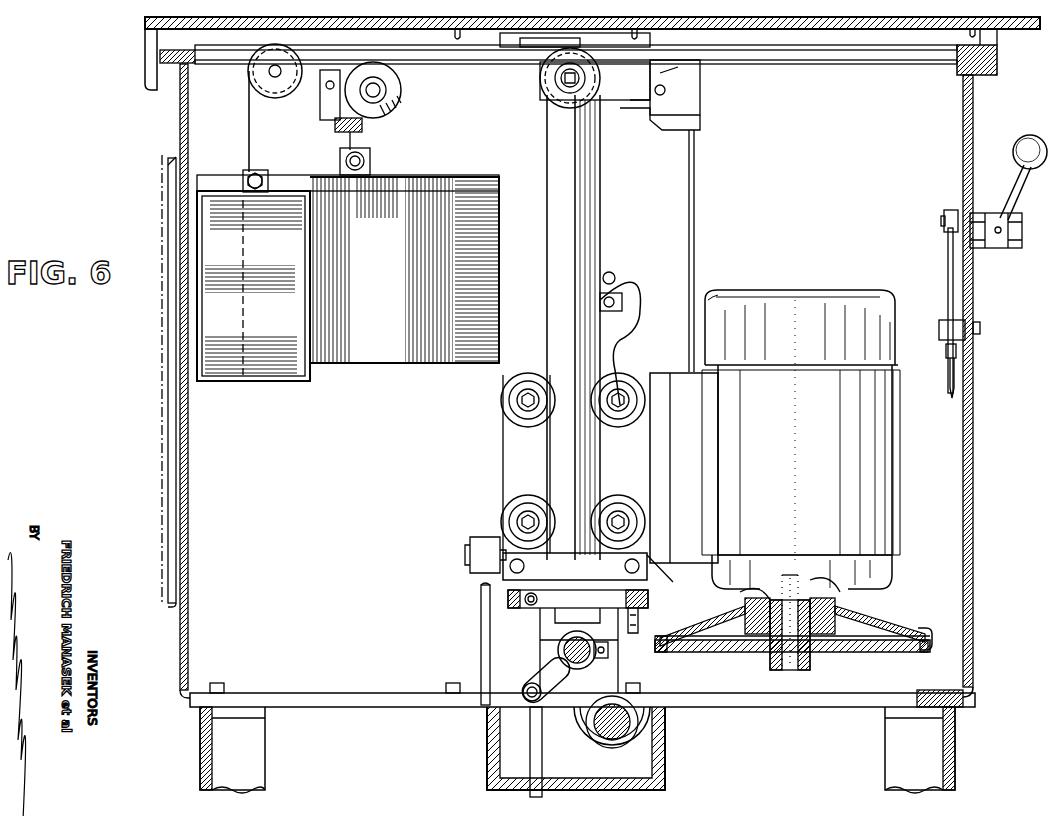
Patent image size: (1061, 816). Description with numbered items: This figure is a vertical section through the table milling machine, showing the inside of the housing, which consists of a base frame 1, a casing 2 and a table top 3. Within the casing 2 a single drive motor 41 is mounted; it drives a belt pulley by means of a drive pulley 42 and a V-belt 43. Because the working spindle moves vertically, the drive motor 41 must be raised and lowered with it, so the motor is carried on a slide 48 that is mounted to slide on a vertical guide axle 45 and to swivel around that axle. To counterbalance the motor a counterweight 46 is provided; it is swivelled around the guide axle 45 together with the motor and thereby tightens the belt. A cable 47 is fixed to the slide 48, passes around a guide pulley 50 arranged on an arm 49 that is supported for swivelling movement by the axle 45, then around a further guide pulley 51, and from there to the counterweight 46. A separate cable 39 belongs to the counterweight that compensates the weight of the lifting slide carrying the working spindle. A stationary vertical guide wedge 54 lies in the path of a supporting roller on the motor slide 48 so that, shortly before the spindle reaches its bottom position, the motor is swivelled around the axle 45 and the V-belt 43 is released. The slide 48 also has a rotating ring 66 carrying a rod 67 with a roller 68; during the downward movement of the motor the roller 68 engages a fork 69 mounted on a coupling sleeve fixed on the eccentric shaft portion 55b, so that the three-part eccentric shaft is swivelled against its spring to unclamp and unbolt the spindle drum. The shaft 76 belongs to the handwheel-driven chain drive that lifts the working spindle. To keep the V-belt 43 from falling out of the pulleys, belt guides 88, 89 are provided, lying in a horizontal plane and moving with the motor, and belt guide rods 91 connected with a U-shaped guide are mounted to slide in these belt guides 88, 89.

The base frame 1 is at (960, 748).
The casing 2 is at (180, 630).
The table top 3 is at (575, 24).
The cable 39 is at (248, 134).
The drive motor 41 is at (876, 468).
The drive pulley 42 is at (876, 638).
The V-belt 43 is at (922, 628).
The vertical guide axle 45 is at (588, 218).
The counterweight 46 is at (272, 359).
The cable 47 is at (694, 240).
The slide 48 is at (520, 460).
The arm 49 is at (610, 95).
The guide pulley 50 is at (692, 92).
The further guide pulley 51 is at (381, 112).
The stationary vertical guide wedge 54 is at (480, 637).
The eccentric shaft portion 55b is at (577, 660).
The rotating ring 66 is at (508, 599).
The rod 67 is at (531, 738).
The roller 68 is at (523, 690).
The fork 69 is at (532, 670).
The shaft 76 is at (632, 733).
The belt guide 88 is at (870, 616).
The belt guide 89 is at (700, 616).
The belt guide rods 91 is at (654, 651).